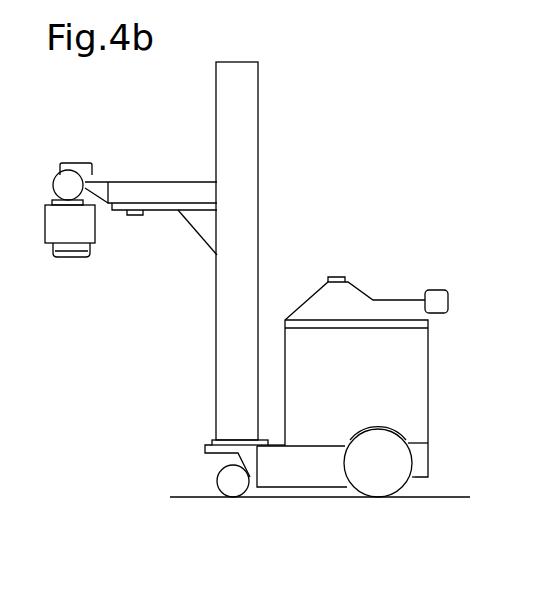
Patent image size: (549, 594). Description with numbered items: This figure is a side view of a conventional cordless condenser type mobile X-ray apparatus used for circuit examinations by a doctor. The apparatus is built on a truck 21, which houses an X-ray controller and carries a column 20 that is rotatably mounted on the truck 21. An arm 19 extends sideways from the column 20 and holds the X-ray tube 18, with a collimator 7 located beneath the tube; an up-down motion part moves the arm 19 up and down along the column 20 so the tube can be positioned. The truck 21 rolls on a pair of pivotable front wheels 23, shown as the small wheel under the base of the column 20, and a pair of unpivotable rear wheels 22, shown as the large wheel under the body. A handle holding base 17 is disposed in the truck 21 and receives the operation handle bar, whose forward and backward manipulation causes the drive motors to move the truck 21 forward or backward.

The collimator 7 is at (45, 232).
The handle holding base 17 is at (442, 300).
The X-ray tube 18 is at (83, 163).
The arm 19 is at (140, 192).
The column 20 is at (247, 128).
The truck 21 is at (425, 390).
The rear wheels 22 is at (378, 487).
The front wheels 23 is at (233, 488).